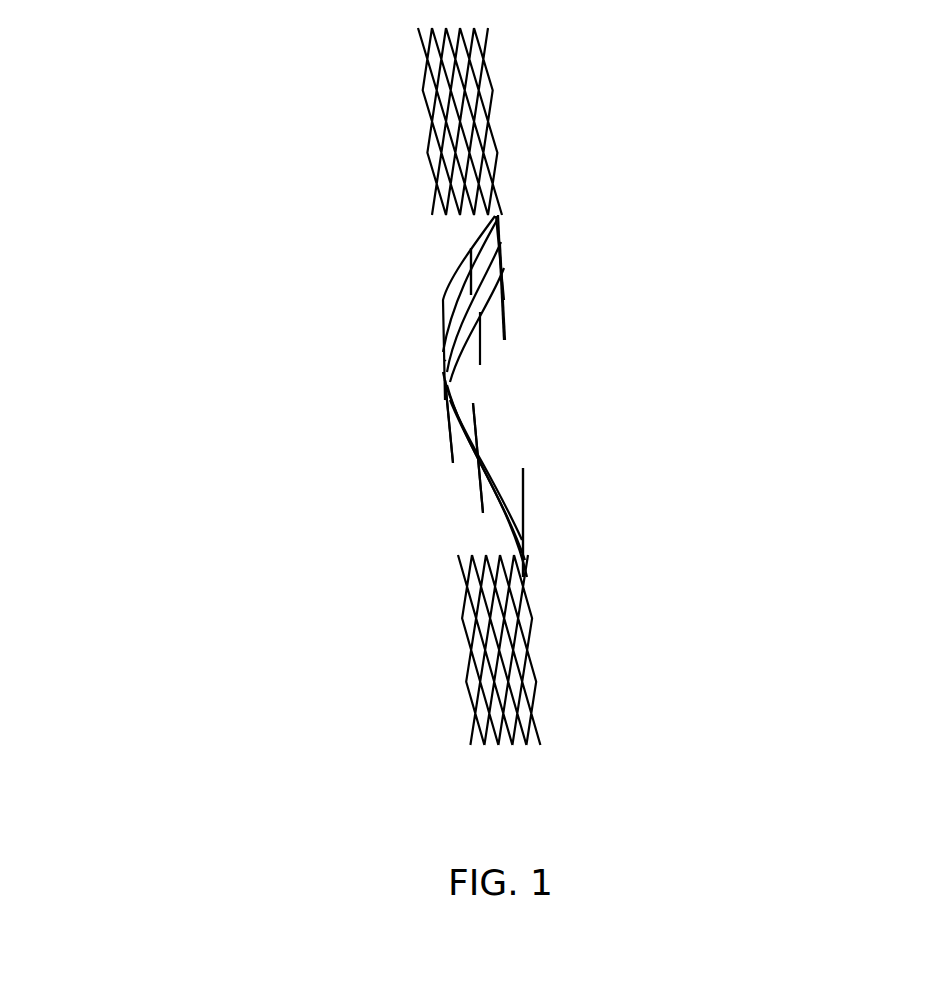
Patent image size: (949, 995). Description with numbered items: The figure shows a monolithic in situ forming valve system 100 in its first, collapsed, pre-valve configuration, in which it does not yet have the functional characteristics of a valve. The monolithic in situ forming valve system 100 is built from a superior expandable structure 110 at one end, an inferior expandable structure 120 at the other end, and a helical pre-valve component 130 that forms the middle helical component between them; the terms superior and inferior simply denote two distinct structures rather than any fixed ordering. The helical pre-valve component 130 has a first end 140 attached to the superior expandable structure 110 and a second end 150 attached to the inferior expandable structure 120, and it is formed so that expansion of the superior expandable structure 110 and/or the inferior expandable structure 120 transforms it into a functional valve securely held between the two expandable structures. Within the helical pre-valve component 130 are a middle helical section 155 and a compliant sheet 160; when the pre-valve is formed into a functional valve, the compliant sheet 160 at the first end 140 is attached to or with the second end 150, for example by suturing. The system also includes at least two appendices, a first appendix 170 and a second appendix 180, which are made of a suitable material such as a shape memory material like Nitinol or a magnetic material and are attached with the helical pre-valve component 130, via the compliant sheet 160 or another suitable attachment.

The monolithic in situ forming valve system 100 is at (665, 565).
The superior expandable structure 110 is at (420, 83).
The inferior expandable structure 120 is at (462, 677).
The helical pre-valve component 130 is at (268, 540).
The first end 140 is at (500, 216).
The second end 150 is at (525, 573).
The middle helical section 155 is at (468, 456).
The compliant sheet 160 is at (458, 286).
The first appendix 170 is at (505, 325).
The second appendix 180 is at (525, 475).